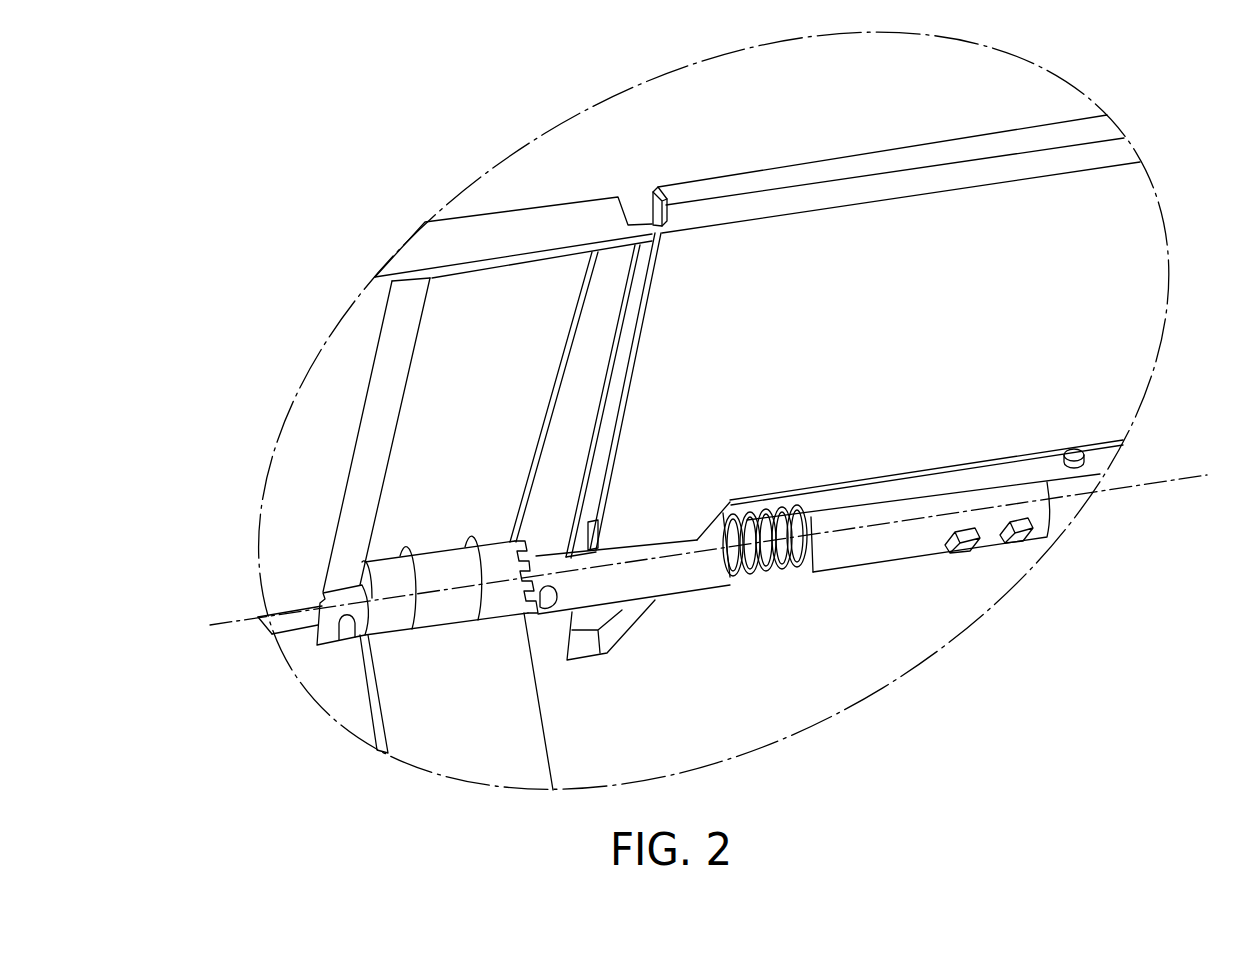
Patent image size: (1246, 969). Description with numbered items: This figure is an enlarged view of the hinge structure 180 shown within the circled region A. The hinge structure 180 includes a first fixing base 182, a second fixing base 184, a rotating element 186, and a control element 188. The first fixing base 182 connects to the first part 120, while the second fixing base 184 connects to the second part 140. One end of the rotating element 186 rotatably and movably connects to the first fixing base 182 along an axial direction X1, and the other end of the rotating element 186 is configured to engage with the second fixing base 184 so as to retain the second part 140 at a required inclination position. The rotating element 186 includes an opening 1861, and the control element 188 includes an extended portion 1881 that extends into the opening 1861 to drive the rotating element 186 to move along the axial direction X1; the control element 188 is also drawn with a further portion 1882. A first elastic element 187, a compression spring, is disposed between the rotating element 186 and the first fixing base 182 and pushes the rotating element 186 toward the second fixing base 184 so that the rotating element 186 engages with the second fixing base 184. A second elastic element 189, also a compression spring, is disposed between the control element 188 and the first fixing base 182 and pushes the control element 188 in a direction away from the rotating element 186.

The first part 120 is at (557, 223).
The second part 140 is at (415, 707).
The hinge structure 180 is at (303, 600).
The first fixing base 182 is at (873, 550).
The second fixing base 184 is at (487, 540).
The rotating element 186 is at (697, 577).
The first elastic element 187 is at (772, 568).
The control element 188 is at (825, 320).
The second elastic element 189 is at (1073, 452).
The opening 1861 is at (673, 541).
The extended portion 1881 is at (620, 547).
The rail 1882 is at (763, 183).
The enlarged region A is at (285, 423).
The axial direction X1 is at (1180, 480).